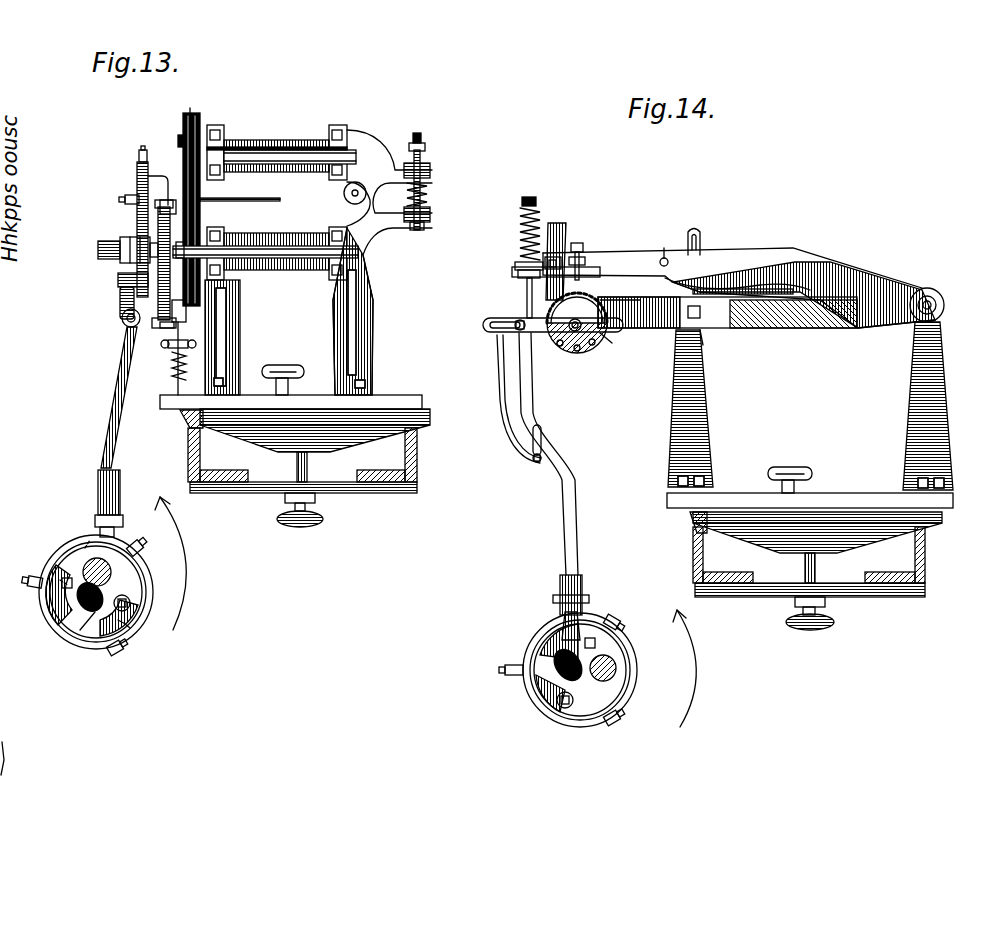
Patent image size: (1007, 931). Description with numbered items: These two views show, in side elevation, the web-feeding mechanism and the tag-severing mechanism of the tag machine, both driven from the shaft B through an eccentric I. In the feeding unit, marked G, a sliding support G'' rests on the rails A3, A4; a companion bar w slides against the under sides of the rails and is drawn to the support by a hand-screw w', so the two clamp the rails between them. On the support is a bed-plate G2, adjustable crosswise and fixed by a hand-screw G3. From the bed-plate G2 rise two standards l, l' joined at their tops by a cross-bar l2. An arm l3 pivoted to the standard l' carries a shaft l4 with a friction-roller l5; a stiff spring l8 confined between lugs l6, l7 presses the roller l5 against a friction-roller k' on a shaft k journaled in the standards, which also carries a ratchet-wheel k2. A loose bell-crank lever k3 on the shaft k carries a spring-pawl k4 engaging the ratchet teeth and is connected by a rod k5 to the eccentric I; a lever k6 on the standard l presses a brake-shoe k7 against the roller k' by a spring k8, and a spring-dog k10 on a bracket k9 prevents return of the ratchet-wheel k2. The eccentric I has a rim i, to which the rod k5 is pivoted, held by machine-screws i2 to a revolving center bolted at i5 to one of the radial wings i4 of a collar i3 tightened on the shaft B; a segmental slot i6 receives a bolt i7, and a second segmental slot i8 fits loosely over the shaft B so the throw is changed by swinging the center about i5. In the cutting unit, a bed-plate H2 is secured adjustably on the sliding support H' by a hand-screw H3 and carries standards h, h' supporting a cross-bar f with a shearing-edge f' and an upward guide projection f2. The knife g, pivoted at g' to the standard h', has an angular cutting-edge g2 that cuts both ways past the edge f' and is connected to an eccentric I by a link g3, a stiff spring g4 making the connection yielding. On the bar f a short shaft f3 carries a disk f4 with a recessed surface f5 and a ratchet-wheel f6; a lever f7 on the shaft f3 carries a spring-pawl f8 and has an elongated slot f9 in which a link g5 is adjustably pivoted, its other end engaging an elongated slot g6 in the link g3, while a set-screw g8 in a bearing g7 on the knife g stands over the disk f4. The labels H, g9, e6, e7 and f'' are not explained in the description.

In FIG. 13, the head casting G is at (388, 161).
In FIG. 13, the bed-plate G2 is at (389, 399).
In FIG. 13, the hand-screw G3 is at (283, 363).
In FIG. 13, the sliding support G'' is at (305, 445).
In FIG. 13, the standard l is at (223, 337).
In FIG. 13, the standard l' is at (382, 311).
In FIG. 13, the cross-bar l2 is at (270, 238).
In FIG. 13, the arm l3 is at (278, 140).
In FIG. 13, the shaft l4 is at (182, 148).
In FIG. 13, the friction-roller l5 is at (190, 111).
In FIG. 13, the lug l6 is at (430, 214).
In FIG. 13, the lug l7 is at (424, 172).
In FIG. 13, the stiff spring l8 is at (426, 194).
In FIG. 13, the shaft k is at (157, 236).
In FIG. 13, the friction-roller k' is at (185, 264).
In FIG. 13, the ratchet-wheel k2 is at (160, 232).
In FIG. 13, the bell-crank lever k3 is at (137, 207).
In FIG. 13, the spring-pawl k4 is at (135, 197).
In FIG. 13, the rod k5 is at (115, 398).
In FIG. 13, the lever k6 is at (190, 325).
In FIG. 13, the brake-shoe k7 is at (203, 316).
In FIG. 13, the spring k8 is at (176, 366).
In FIG. 13, the bracket k9 is at (176, 335).
In FIG. 13, the spring-dog k10 is at (160, 328).
In FIG. 13, the rail A3 is at (417, 459).
In FIG. 14, the rail A3 is at (925, 559).
In FIG. 13, the rail A4 is at (188, 462).
In FIG. 14, the rail A4 is at (693, 561).
In FIG. 13, the companion bar w is at (329, 506).
In FIG. 14, the companion bar w is at (835, 610).
In FIG. 13, the hand-screw w' is at (286, 532).
In FIG. 14, the hand-screw w' is at (810, 635).
In FIG. 13, the eccentric I is at (82, 592).
In FIG. 14, the eccentric I is at (528, 641).
In FIG. 13, the rim i is at (92, 640).
In FIG. 13, the machine-screws i2 is at (139, 544).
In FIG. 13, the collar i3 is at (84, 546).
In FIG. 13, the radial wings i4 is at (60, 580).
In FIG. 13, the screw-bolt i5 is at (62, 588).
In FIG. 13, the segmental slot i6 is at (131, 623).
In FIG. 13, the bolt i7 is at (131, 601).
In FIG. 13, the segmental slot i8 is at (84, 612).
In FIG. 13, the shaft B is at (110, 578).
In FIG. 14, the shaft B is at (610, 672).
In FIG. 14, the frame H is at (758, 188).
In FIG. 14, the sliding support H' is at (816, 547).
In FIG. 14, the bed-plate H2 is at (830, 506).
In FIG. 14, the hand-screw H3 is at (790, 467).
In FIG. 14, the standard h is at (707, 408).
In FIG. 14, the standard h' is at (905, 406).
In FIG. 14, the knife g is at (739, 273).
In FIG. 14, the pivot g' is at (949, 297).
In FIG. 14, the angular cutting-edge g2 is at (745, 284).
In FIG. 14, the link g3 is at (556, 522).
In FIG. 14, the stiff spring g4 is at (517, 238).
In FIG. 14, the link g5 is at (499, 408).
In FIG. 14, the elongated slot g6 is at (545, 449).
In FIG. 14, the bearing g7 is at (584, 268).
In FIG. 14, the set-screw g8 is at (579, 243).
In FIG. 14, the pin g9 is at (663, 256).
In FIG. 14, the knife e6 is at (691, 291).
In FIG. 14, the guide e7 is at (703, 242).
In FIG. 14, the cross-bar f is at (727, 344).
In FIG. 14, the shearing-edge f' is at (729, 345).
In FIG. 14, the guide projection f2 is at (556, 224).
In FIG. 14, the short shaft f3 is at (562, 346).
In FIG. 14, the disk f4 is at (608, 338).
In FIG. 14, the recessed surface f5 is at (550, 318).
In FIG. 14, the ratchet-wheel f6 is at (572, 306).
In FIG. 14, the lever f7 is at (580, 340).
In FIG. 14, the spring-pawl f8 is at (613, 302).
In FIG. 14, the elongated slot f9 is at (490, 331).
In FIG. 14, the pin f'' is at (597, 366).